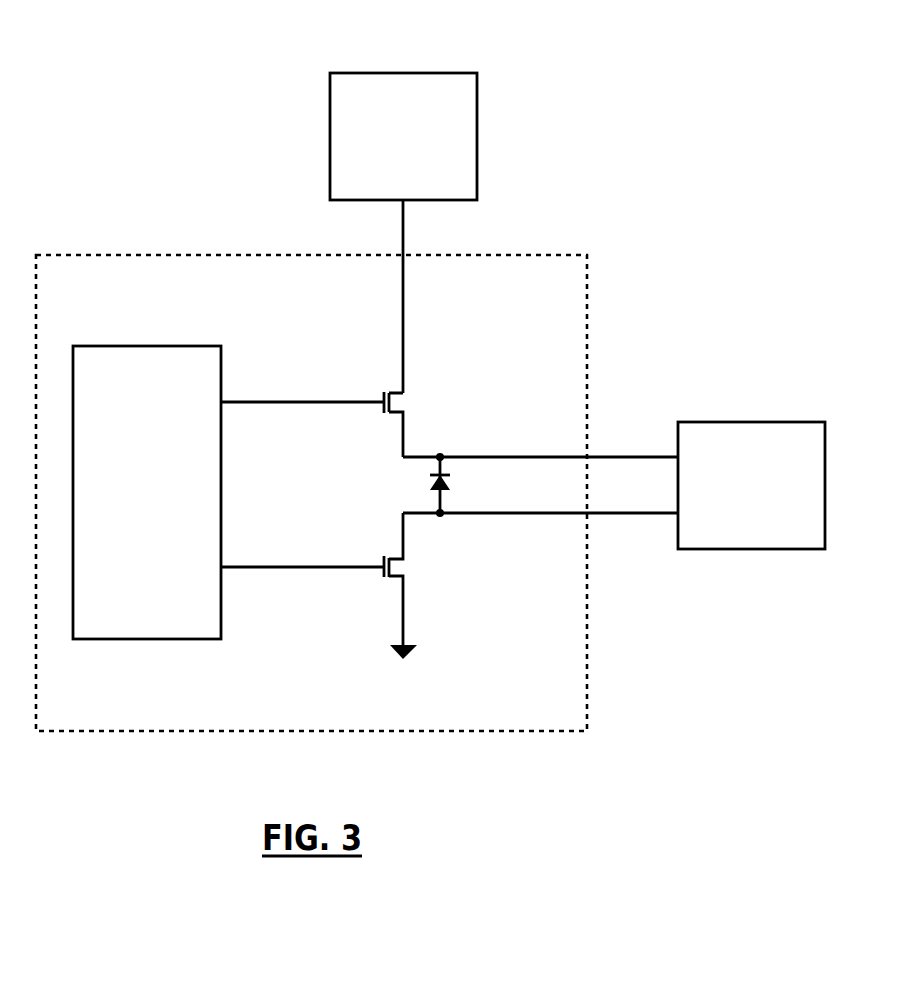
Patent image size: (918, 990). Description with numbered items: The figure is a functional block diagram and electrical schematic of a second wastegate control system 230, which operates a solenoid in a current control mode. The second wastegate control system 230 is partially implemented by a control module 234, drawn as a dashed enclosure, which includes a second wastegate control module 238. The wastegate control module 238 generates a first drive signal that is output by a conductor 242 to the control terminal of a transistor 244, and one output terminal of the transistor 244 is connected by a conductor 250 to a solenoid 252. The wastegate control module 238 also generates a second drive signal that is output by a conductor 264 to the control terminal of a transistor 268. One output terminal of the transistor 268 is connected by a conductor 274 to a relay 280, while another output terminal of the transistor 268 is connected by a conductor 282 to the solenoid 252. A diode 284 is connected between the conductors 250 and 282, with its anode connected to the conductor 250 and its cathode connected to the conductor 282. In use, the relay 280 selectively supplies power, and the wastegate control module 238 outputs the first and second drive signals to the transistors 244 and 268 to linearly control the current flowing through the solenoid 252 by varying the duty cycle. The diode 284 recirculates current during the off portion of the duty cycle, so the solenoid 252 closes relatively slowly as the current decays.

The second wastegate control system 230 is at (125, 160).
The control module 234 is at (108, 255).
The second wastegate control module 238 is at (147, 345).
The conductor 242 is at (330, 567).
The transistor 244 is at (372, 597).
The conductor 250 is at (497, 513).
The solenoid 252 is at (752, 549).
The conductor 264 is at (295, 402).
The transistor 268 is at (385, 422).
The conductor 274 is at (405, 340).
The relay 280 is at (478, 133).
The conductor 282 is at (495, 457).
The diode 284 is at (451, 483).